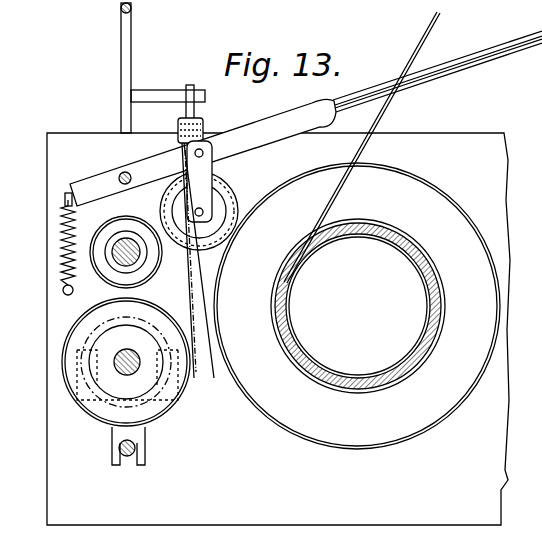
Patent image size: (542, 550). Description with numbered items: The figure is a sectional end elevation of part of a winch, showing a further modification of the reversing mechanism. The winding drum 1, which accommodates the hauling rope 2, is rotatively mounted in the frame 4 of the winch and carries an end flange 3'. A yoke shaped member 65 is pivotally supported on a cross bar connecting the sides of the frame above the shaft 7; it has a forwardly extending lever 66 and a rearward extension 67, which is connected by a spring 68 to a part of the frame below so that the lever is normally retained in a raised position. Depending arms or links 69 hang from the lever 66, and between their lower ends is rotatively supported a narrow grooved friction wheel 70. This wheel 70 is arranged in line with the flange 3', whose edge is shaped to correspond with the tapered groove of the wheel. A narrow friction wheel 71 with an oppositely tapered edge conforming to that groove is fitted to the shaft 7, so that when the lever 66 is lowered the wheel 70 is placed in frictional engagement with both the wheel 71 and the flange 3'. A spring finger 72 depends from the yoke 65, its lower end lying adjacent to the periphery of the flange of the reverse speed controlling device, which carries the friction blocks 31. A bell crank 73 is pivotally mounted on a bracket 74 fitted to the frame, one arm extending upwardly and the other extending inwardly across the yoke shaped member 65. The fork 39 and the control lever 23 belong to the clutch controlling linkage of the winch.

The winding drum 1 is at (409, 243).
The hauling rope 2 is at (381, 113).
The end flange 3' is at (357, 304).
The frame 4 is at (278, 329).
The shaft 7 is at (107, 277).
The control lever 23 is at (131, 63).
The friction blocks 31 is at (73, 401).
The fork 39 is at (115, 433).
The yoke shaped member 65 is at (203, 152).
The lever 66 is at (443, 79).
The rearward extension 67 is at (70, 183).
The spring 68 is at (61, 250).
The depending arms or links 69 is at (214, 164).
The narrow grooved friction wheel 70 is at (226, 192).
The narrow friction wheel 71 is at (120, 267).
The spring finger 72 is at (191, 290).
The bell crank 73 is at (195, 113).
The bracket 74 is at (205, 132).